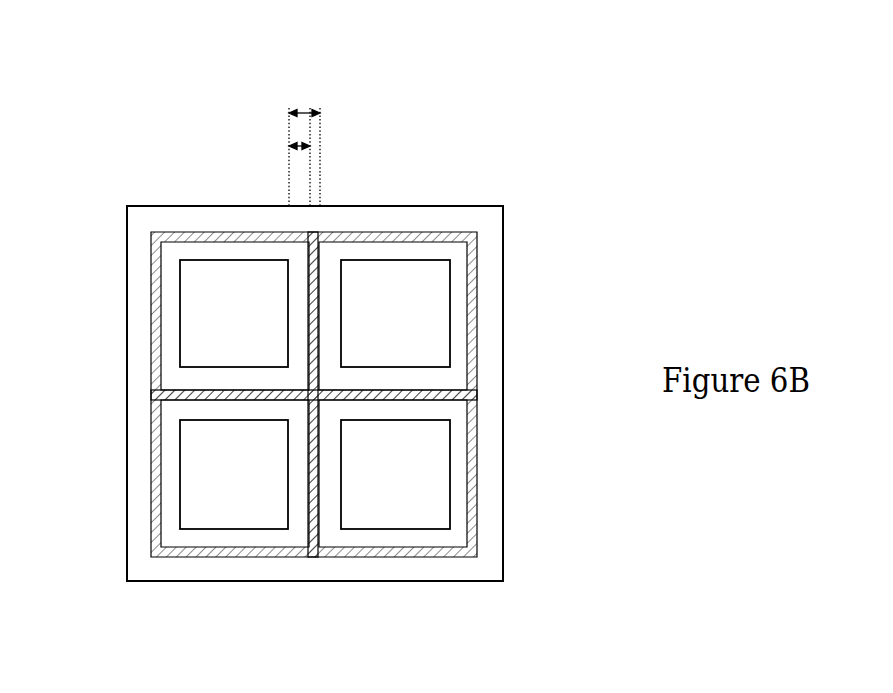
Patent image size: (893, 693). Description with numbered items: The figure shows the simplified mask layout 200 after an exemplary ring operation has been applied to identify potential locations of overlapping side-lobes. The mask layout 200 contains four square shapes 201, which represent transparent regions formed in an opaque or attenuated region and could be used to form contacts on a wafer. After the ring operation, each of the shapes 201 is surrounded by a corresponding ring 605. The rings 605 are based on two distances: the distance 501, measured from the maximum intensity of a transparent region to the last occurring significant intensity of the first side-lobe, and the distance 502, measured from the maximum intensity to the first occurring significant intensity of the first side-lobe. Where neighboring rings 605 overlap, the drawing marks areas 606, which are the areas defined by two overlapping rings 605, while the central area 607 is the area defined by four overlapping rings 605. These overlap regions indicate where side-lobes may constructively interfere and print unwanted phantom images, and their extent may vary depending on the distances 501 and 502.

The mask layout 200 is at (490, 581).
The shapes 201 is at (315, 394).
The distance 501 is at (302, 110).
The distance 502 is at (303, 140).
The rings 605 is at (337, 205).
The areas 606 is at (150, 396).
The area 607 is at (318, 404).